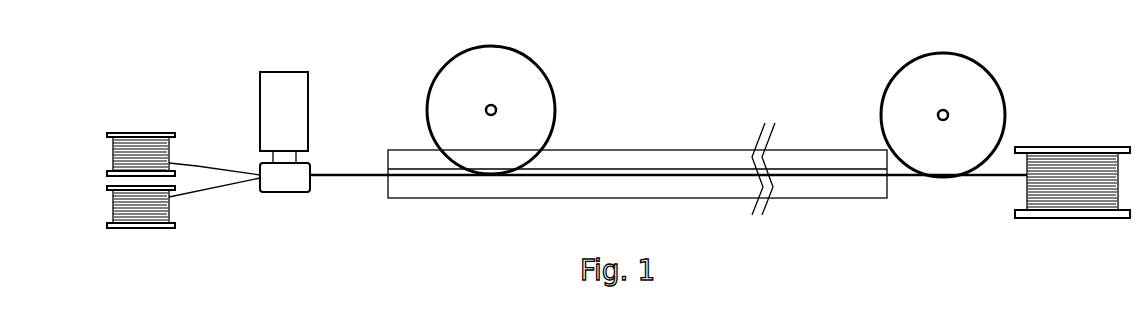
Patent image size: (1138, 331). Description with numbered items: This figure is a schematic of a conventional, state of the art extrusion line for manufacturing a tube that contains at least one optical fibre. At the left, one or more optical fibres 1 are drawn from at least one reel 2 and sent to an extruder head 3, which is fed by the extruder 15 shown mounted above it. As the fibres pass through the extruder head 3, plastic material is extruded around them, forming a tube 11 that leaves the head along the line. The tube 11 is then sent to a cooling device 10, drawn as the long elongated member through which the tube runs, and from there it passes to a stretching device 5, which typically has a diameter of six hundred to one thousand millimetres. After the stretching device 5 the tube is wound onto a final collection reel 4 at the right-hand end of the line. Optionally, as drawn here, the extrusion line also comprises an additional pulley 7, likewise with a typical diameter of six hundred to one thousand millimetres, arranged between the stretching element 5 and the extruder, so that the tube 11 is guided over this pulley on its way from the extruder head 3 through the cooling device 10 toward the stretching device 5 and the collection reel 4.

The optical fibre 1 is at (198, 167).
The reel 2 is at (123, 133).
The extruder head 3 is at (292, 185).
The final collection reel 4 is at (1075, 150).
The stretching device 5 is at (898, 118).
The additional pulley 7 is at (467, 78).
The cooling device 10 is at (620, 158).
The tube 11 is at (348, 178).
The extruder 15 is at (287, 102).